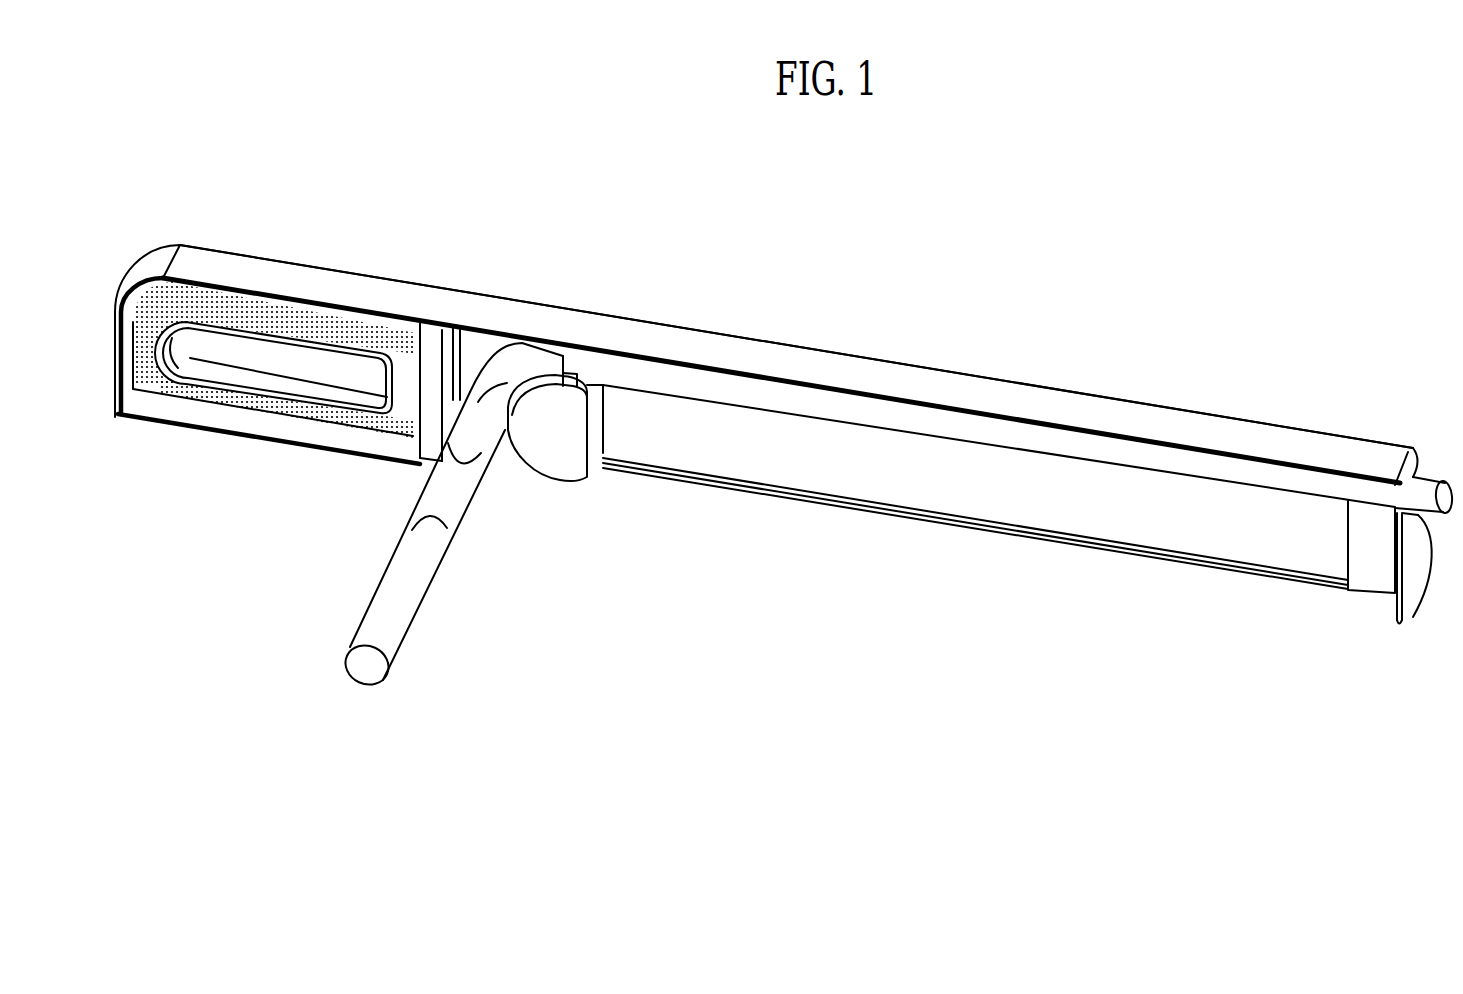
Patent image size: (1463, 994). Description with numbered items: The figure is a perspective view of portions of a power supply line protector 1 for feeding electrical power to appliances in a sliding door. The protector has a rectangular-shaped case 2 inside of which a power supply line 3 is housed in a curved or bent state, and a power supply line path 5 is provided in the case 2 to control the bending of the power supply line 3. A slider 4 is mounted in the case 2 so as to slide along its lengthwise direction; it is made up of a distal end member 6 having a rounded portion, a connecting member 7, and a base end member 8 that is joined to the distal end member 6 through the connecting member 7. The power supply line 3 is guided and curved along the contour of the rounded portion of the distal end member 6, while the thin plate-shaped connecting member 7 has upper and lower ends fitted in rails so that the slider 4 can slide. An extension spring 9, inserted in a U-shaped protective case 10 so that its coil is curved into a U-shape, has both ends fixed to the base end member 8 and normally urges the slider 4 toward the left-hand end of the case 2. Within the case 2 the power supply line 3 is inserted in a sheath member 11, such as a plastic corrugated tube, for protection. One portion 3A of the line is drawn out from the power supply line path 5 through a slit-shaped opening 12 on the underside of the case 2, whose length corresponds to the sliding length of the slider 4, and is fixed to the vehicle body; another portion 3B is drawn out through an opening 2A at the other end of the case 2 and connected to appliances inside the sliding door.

The power supply line protector 1 is at (733, 333).
The case 2 is at (1210, 428).
The opening 2A is at (1413, 617).
The power supply line 3 is at (897, 528).
The portion of power supply line 3A is at (407, 580).
The portion of power supply line 3B is at (1427, 488).
The slider 4 is at (562, 452).
The power supply line path 5 is at (500, 443).
The distal end member 6 is at (574, 431).
The connecting member 7 is at (478, 348).
The base end member 8 is at (433, 357).
The extension spring 9 is at (298, 300).
The U-shaped protective case 10 is at (163, 313).
The sheath member 11 is at (837, 408).
The opening 12 is at (1125, 565).